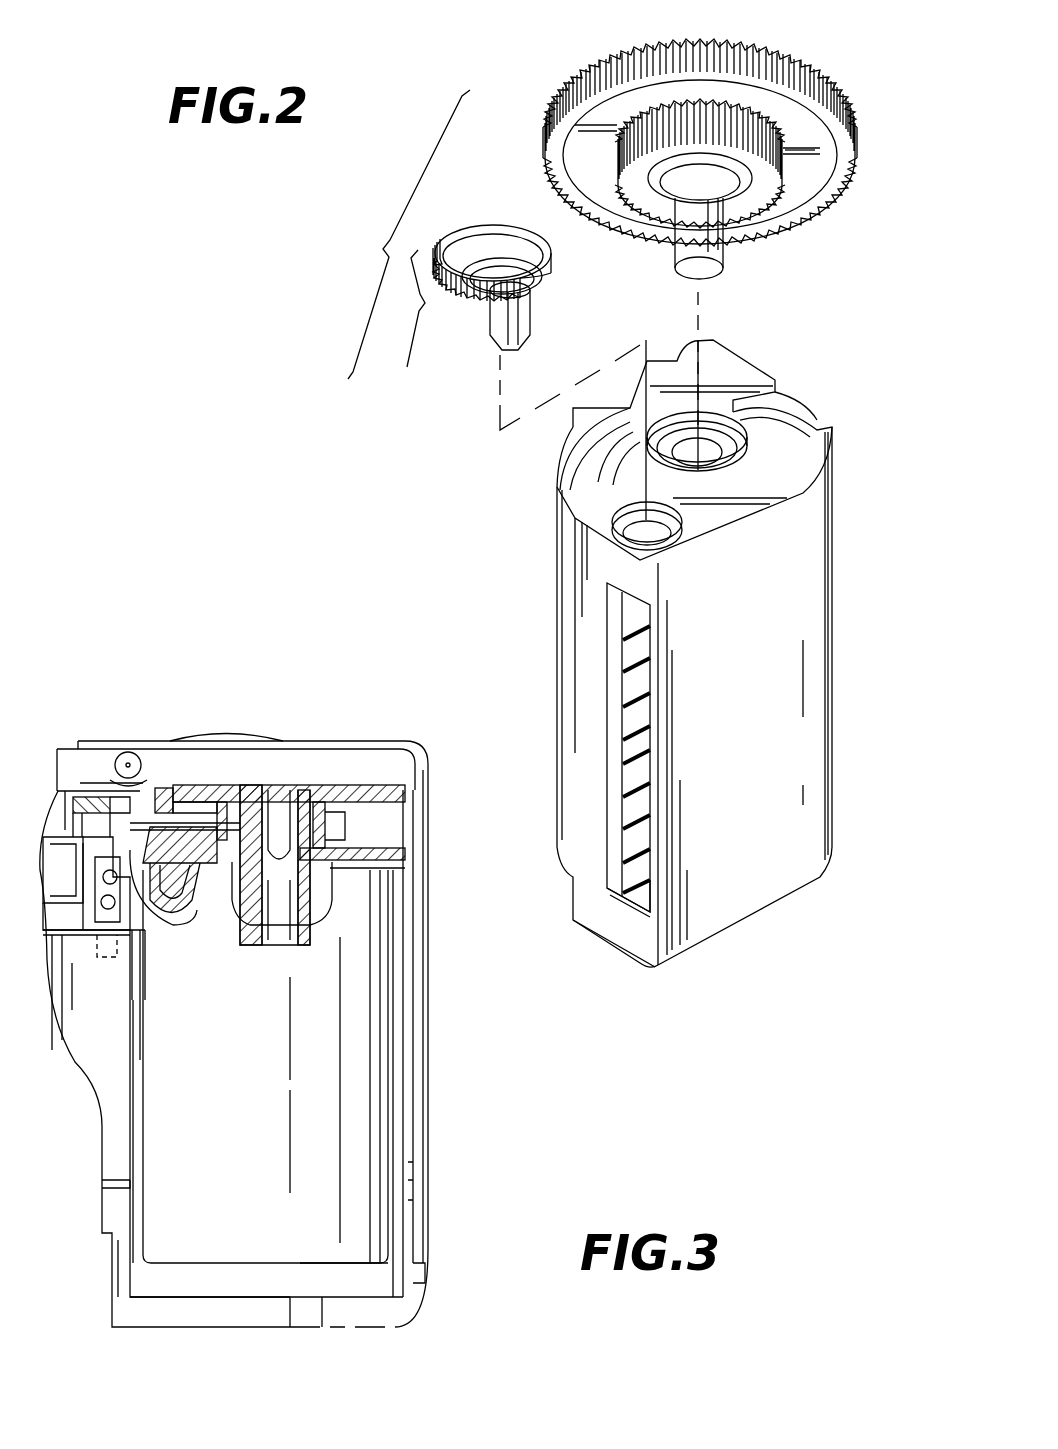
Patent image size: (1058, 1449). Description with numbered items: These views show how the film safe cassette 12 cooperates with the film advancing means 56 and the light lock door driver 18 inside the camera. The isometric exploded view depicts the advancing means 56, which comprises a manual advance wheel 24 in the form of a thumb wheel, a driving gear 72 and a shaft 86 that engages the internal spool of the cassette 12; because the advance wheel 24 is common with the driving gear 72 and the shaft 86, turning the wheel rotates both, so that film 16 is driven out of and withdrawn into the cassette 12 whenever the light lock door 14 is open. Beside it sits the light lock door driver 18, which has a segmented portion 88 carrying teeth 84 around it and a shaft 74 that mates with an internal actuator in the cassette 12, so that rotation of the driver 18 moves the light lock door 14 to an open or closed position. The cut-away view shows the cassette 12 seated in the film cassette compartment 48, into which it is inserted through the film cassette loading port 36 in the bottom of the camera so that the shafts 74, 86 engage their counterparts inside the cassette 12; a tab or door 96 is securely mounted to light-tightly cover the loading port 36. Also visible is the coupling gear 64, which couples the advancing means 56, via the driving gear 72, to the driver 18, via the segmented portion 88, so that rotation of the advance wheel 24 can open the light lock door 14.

In FIG. 2, the film cassette 12 is at (752, 701).
In FIG. 3, the film cassette 12 is at (259, 1064).
In FIG. 2, the light lock door 14 is at (637, 872).
In FIG. 3, the film 16 is at (112, 1080).
In FIG. 2, the light lock door driver 18 is at (502, 237).
In FIG. 3, the light lock door driver 18 is at (173, 850).
In FIG. 2, the advance wheel 24 is at (642, 62).
In FIG. 3, the advance wheel 24 is at (397, 787).
In FIG. 3, the film cassette loading port 36 is at (330, 1277).
In FIG. 3, the film cassette compartment 48 is at (390, 1080).
In FIG. 2, the film advancing means 56 is at (500, 74).
In FIG. 3, the coupling gear 64 is at (170, 853).
In FIG. 2, the driving gear 72 is at (798, 160).
In FIG. 3, the driving gear 72 is at (173, 915).
In FIG. 2, the shaft 74 is at (530, 315).
In FIG. 2, the teeth 84 is at (460, 238).
In FIG. 2, the shaft 86 is at (705, 275).
In FIG. 2, the segmented portion 88 is at (410, 325).
In FIG. 3, the door 96 is at (240, 1313).